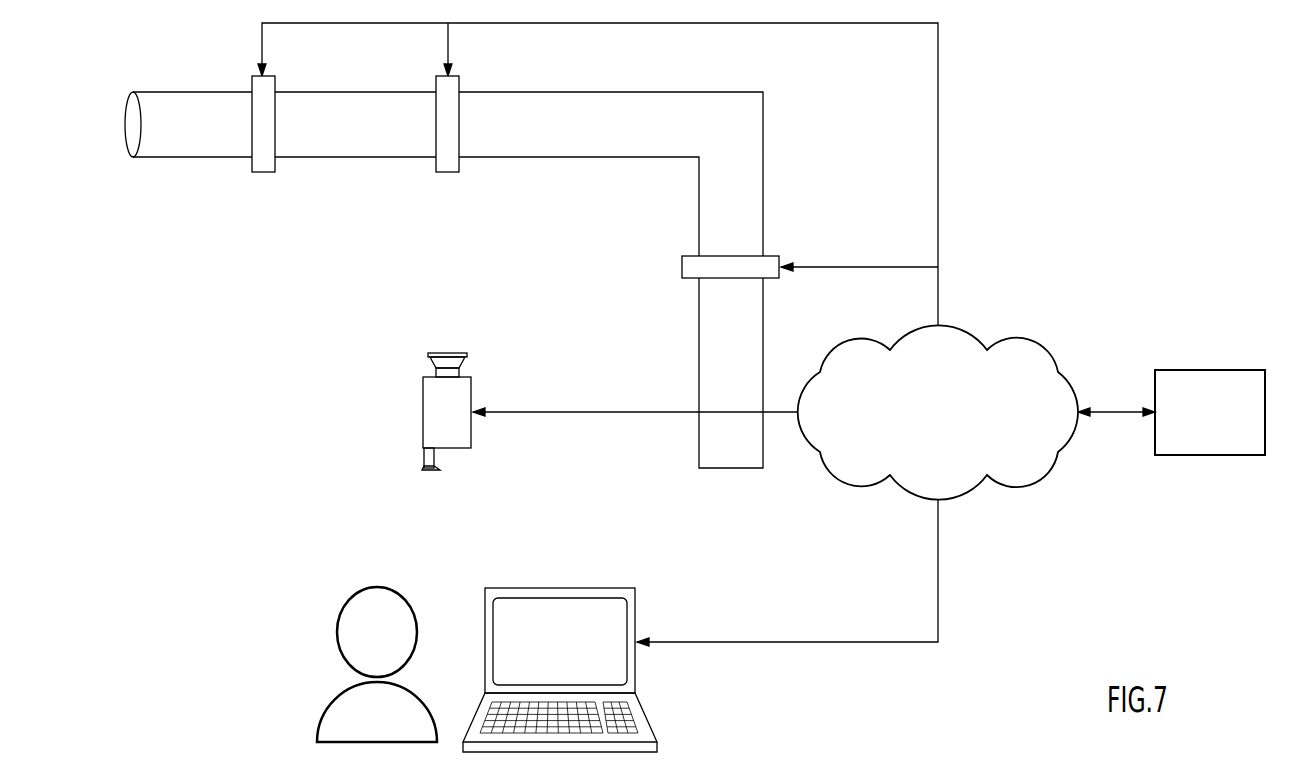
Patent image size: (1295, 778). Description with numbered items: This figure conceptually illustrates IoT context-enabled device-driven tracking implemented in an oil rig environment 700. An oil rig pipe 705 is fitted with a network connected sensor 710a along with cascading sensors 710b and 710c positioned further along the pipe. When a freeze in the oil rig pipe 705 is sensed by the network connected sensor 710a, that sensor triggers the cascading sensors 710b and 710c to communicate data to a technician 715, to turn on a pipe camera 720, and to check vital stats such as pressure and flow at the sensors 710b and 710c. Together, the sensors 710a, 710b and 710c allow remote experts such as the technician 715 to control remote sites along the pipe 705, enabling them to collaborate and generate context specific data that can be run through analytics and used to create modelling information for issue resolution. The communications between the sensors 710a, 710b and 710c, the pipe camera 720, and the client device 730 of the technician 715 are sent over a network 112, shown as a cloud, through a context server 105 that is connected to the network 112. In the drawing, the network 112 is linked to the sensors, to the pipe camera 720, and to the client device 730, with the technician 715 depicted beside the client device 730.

The oil rig environment 700 is at (1107, 73).
The oil rig pipe 705 is at (357, 90).
The network connected sensor 710a is at (263, 173).
The cascading sensor 710b is at (460, 88).
The cascading sensor 710c is at (682, 267).
The network 112 is at (1046, 350).
The context server 105 is at (1210, 370).
The pipe camera 720 is at (423, 413).
The technician 715 is at (337, 632).
The client device 730 is at (573, 588).